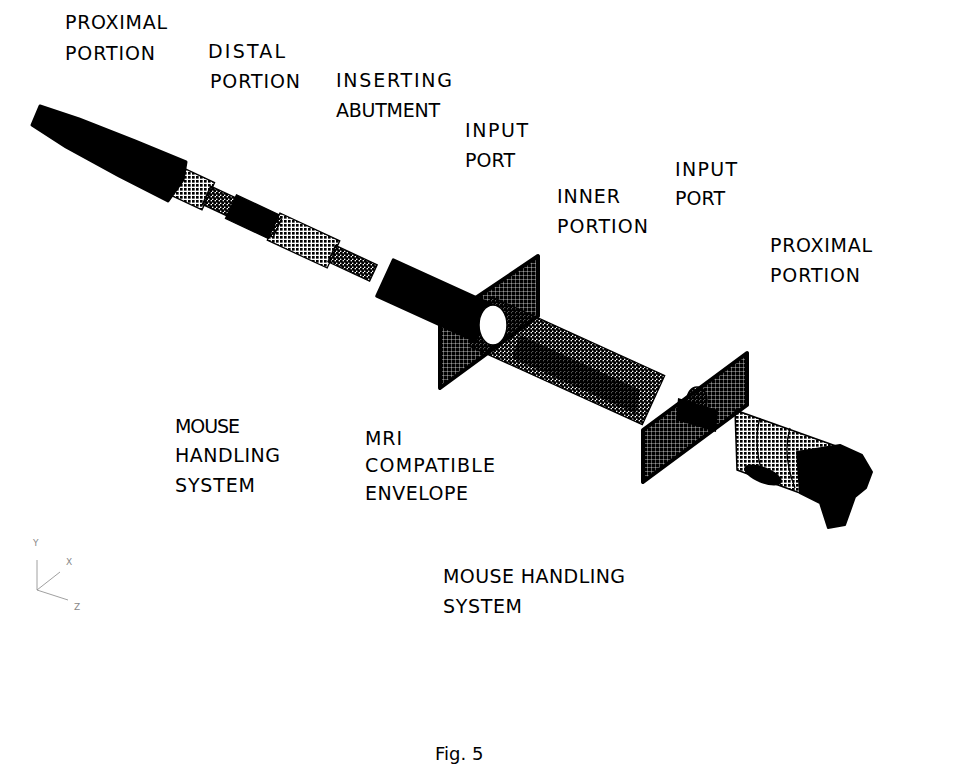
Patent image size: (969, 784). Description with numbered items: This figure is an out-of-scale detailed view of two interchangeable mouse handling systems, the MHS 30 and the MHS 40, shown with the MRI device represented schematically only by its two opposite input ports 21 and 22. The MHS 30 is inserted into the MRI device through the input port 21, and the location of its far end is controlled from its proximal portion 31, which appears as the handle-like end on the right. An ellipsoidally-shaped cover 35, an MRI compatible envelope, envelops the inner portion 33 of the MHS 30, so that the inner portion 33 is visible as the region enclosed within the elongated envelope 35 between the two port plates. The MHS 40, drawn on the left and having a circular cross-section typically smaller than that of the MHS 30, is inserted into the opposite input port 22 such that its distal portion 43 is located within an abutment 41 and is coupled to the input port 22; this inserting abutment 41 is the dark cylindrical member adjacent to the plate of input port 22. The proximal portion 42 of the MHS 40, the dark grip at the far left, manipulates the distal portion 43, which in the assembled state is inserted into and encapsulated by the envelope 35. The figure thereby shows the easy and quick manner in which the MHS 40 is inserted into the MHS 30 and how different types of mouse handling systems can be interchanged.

The input port 21 is at (697, 388).
The input port 22 is at (476, 296).
The MHS 30 is at (624, 342).
The proximal portion 31 is at (781, 428).
The inner portion 33 is at (625, 362).
The cover 35 is at (558, 345).
The MHS 40 is at (204, 255).
The abutment 41 is at (406, 268).
The proximal portion 42 is at (157, 218).
The distal portion 43 is at (263, 245).